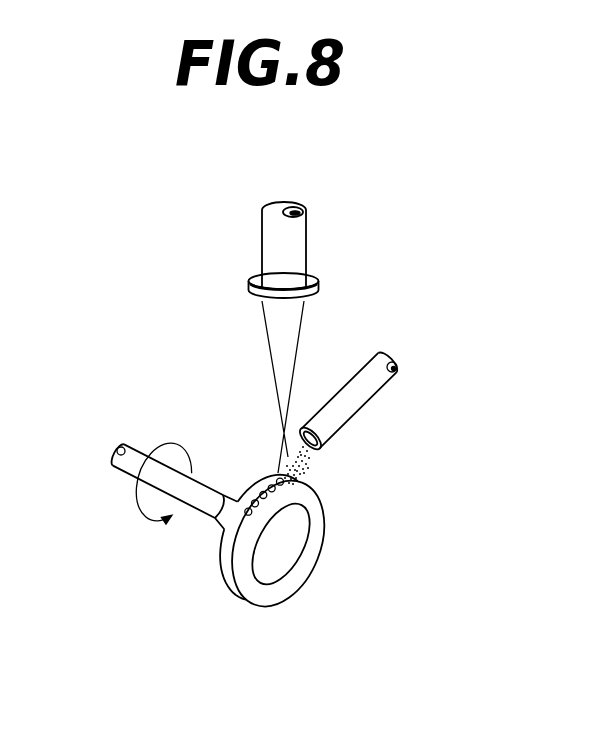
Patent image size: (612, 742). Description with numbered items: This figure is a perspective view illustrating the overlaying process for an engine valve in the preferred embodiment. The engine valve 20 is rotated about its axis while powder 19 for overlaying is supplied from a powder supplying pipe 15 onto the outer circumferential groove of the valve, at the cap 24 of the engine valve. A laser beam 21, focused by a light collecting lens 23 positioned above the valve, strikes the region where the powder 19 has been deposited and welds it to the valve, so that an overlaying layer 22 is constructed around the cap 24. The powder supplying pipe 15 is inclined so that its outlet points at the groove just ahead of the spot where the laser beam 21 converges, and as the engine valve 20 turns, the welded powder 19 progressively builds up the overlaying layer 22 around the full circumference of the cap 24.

The laser beam 21 is at (302, 240).
The light collecting lens 23 is at (249, 296).
The powder supplying pipe 15 is at (369, 370).
The powder 19 is at (296, 477).
The engine valve 20 is at (197, 498).
The cap of an engine valve 24 is at (320, 517).
The overlaying layer 22 is at (293, 506).